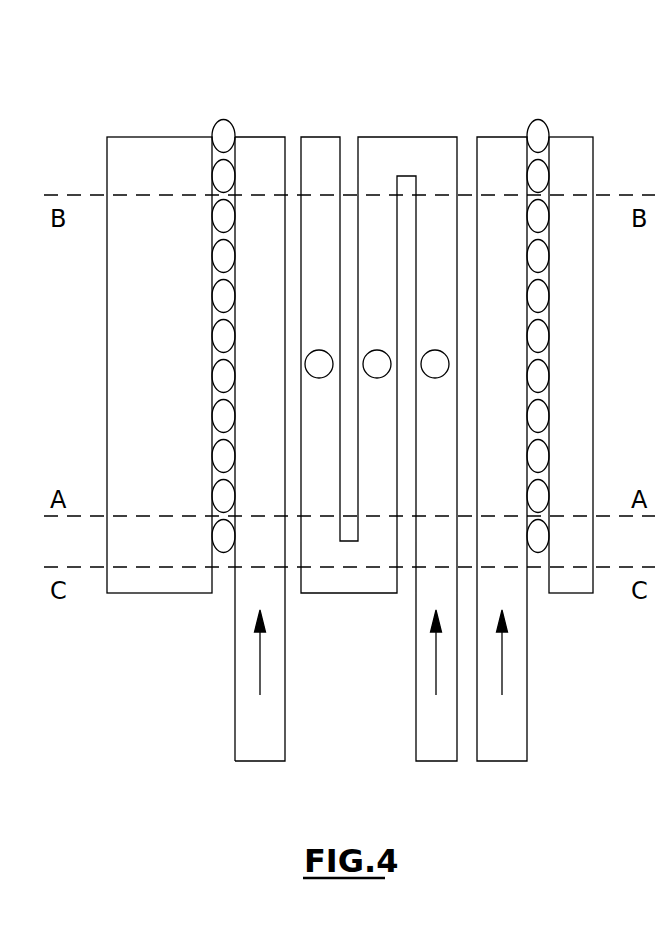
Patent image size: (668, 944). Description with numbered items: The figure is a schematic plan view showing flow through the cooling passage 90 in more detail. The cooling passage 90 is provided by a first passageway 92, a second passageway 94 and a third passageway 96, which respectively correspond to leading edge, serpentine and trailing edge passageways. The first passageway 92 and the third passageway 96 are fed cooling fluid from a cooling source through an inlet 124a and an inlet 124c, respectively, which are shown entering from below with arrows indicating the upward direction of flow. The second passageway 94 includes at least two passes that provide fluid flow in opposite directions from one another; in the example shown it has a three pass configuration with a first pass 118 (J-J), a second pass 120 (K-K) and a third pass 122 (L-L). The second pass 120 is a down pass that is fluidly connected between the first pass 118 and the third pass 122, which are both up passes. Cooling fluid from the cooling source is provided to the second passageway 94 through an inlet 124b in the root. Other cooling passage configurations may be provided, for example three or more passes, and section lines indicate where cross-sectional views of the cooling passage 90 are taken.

The cooling passage 90 is at (603, 92).
The first passageway 92 is at (544, 475).
The second passageway 94 is at (399, 423).
The third passageway 96 is at (207, 131).
The first pass 118 is at (435, 426).
The second pass 120 is at (378, 488).
The third pass 122 is at (302, 364).
The inlet 124a is at (508, 742).
The inlet 124b is at (442, 742).
The inlet 124c is at (266, 742).